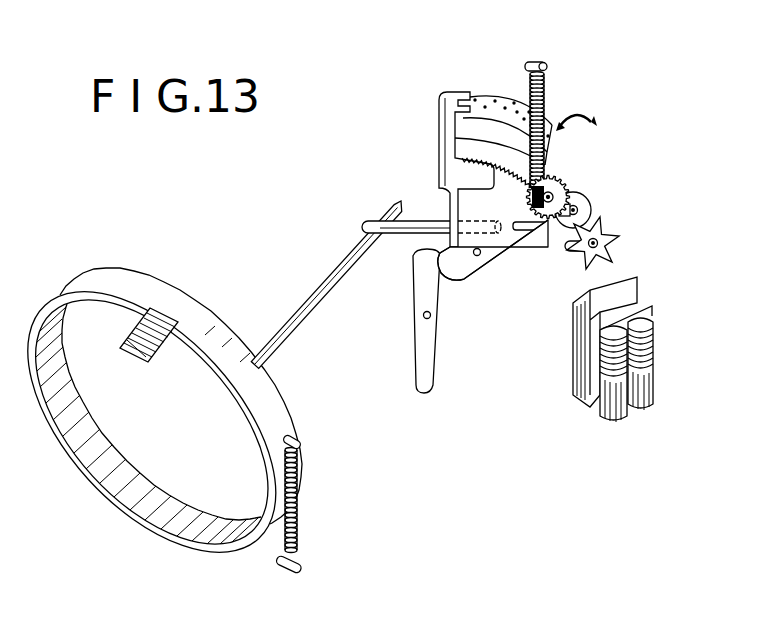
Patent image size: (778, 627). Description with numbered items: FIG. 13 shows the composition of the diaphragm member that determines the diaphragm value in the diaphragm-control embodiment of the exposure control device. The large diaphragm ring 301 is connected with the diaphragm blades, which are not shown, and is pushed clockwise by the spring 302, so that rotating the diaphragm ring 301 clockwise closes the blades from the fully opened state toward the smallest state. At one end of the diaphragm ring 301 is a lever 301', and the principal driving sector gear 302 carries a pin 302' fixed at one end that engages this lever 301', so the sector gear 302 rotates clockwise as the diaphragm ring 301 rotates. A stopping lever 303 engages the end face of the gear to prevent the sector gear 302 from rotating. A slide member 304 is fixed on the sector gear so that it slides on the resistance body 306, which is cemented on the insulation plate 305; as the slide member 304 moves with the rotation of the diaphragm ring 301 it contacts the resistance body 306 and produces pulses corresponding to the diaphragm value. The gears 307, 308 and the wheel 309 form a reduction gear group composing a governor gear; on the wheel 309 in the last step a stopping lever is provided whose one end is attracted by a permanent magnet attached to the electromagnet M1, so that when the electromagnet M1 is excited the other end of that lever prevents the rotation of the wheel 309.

The diaphragm ring 301 is at (161, 421).
The lever 301' is at (326, 284).
The principal driving sector gear 302 is at (411, 397).
The pin 302' is at (454, 197).
The stopping lever 303 is at (422, 357).
The slide member 304 is at (440, 147).
The insulation plate 305 is at (505, 93).
The resistance body 306 is at (483, 103).
The reduction gear 307 is at (553, 176).
The reduction gear 308 is at (591, 205).
The wheel 309 is at (612, 245).
The electromagnet M1 is at (653, 375).